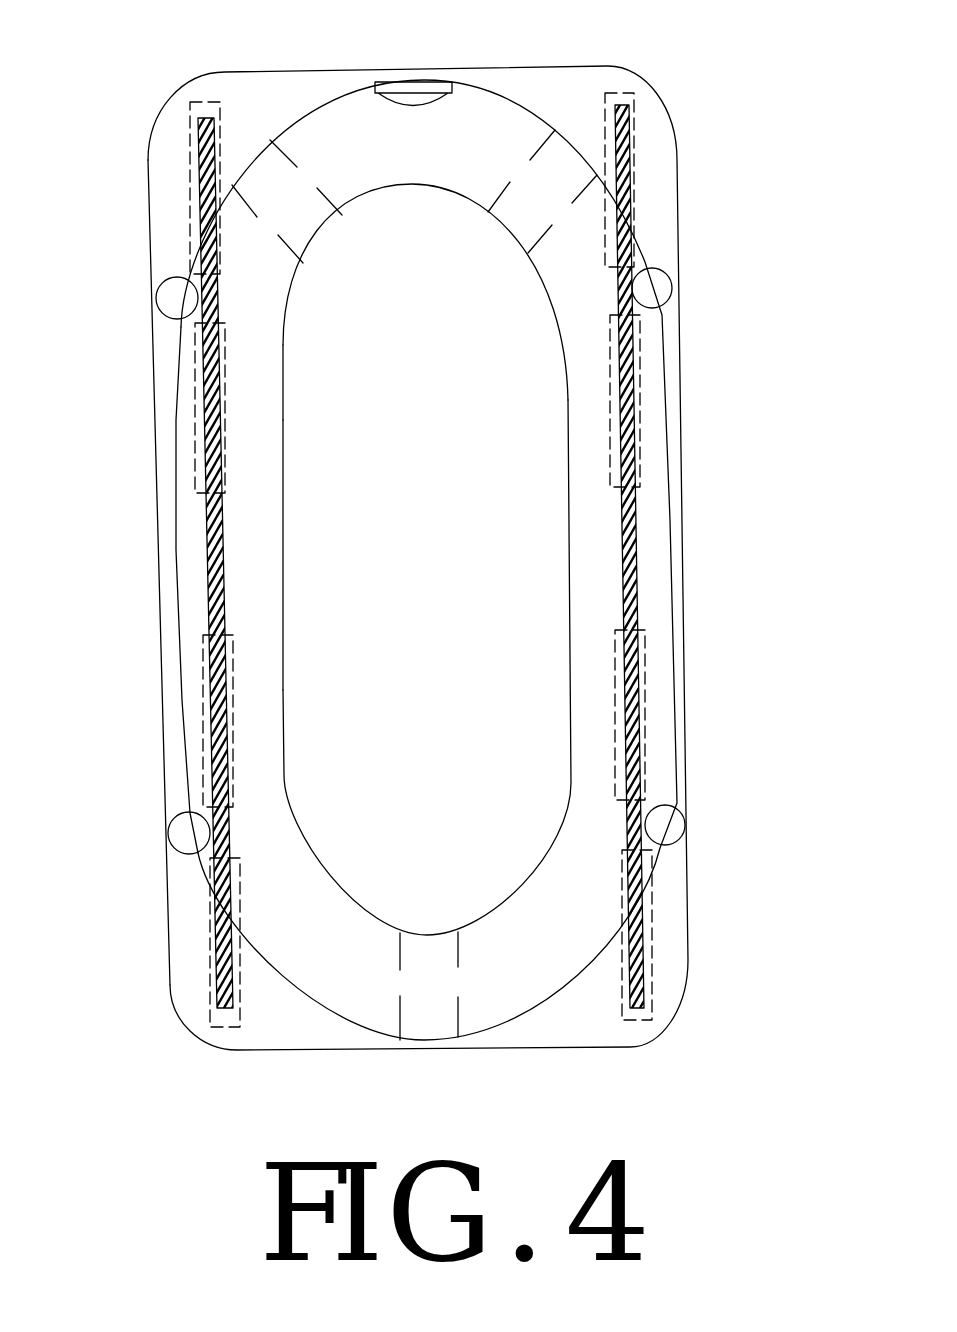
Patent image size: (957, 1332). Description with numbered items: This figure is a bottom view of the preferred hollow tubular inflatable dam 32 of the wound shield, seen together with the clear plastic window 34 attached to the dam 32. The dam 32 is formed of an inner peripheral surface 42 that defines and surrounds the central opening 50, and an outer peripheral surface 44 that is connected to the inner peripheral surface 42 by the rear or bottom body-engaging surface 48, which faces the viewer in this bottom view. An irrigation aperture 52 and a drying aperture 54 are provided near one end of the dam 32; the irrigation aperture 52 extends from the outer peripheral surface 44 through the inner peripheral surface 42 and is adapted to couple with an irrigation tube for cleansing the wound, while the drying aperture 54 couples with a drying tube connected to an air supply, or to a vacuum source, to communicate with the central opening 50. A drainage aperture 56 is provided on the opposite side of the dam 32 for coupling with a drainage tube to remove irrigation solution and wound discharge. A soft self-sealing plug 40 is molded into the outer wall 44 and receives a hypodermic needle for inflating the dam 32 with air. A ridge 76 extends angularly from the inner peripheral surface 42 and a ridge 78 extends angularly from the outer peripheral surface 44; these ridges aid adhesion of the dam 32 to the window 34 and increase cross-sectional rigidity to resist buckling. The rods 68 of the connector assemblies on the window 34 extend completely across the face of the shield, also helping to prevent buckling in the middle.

The inflatable dam 32 is at (373, 528).
The window 34 is at (424, 560).
The self-sealing plug 40 is at (413, 85).
The inner peripheral surface 42 is at (284, 370).
The outer peripheral surface 44 is at (172, 590).
The bottom body-engaging surface 48 is at (223, 597).
The central opening 50 is at (427, 559).
The irrigation aperture 52 is at (307, 233).
The drying aperture 54 is at (516, 219).
The drainage aperture 56 is at (431, 948).
The rod 68 is at (212, 563).
The ridge 76 is at (318, 420).
The ridge 78 is at (160, 526).